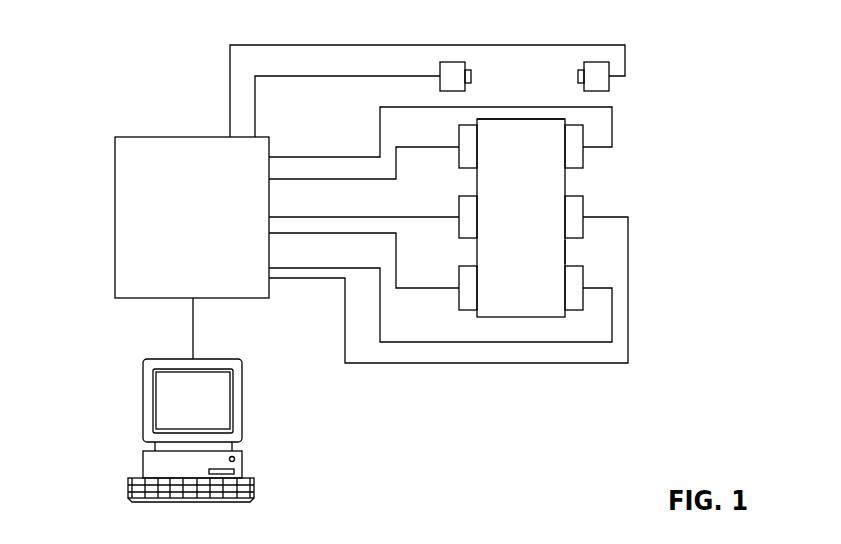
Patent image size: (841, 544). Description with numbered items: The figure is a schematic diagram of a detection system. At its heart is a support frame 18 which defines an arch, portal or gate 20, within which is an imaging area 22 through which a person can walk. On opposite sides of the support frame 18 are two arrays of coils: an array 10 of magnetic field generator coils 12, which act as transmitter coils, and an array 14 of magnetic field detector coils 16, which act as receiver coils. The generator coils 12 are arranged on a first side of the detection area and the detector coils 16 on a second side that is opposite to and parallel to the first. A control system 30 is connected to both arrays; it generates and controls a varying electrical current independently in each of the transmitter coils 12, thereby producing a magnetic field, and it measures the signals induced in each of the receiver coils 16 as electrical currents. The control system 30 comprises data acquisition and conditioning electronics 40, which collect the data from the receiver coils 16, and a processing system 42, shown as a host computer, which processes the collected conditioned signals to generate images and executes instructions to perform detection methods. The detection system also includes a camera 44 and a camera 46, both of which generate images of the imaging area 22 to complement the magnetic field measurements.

The array of magnetic field generator coils 10 is at (461, 318).
The magnetic field generator coils 12 is at (459, 158).
The array of magnetic field detector coils 14 is at (577, 318).
The magnetic field detector coils 16 is at (584, 152).
The support frame 18 is at (567, 257).
The arch, portal or gate 20 is at (536, 119).
The imaging area 22 is at (537, 230).
The control system 30 is at (115, 186).
The data acquisition and conditioning electronics 40 is at (125, 233).
The processing system 42 is at (143, 462).
The camera 44 is at (453, 62).
The camera 46 is at (596, 62).